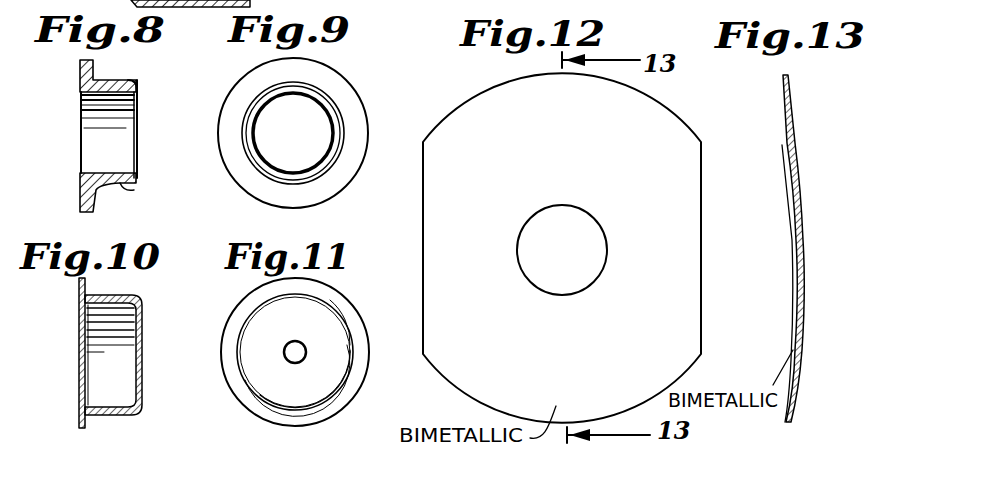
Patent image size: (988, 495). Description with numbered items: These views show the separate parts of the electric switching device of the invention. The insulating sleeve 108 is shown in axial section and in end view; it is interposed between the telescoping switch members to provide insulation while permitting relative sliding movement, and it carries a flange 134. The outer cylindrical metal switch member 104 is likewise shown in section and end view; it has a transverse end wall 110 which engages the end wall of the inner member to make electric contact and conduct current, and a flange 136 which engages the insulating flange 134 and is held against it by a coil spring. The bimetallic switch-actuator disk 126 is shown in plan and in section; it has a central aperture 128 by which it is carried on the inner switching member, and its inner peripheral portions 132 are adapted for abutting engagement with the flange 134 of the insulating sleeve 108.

In FIG. 10, the outer cylindrical metal member 104 is at (118, 415).
In FIG. 11, the outer cylindrical metal member 104 is at (332, 405).
In FIG. 8, the insulating sleeve 108 is at (134, 190).
In FIG. 9, the insulating sleeve 108 is at (240, 147).
In FIG. 10, the transverse end wall 110 is at (142, 386).
In FIG. 11, the transverse end wall 110 is at (262, 324).
In FIG. 12, the bimetallic switch-actuator disk 126 is at (455, 107).
In FIG. 13, the bimetallic switch-actuator disk 126 is at (772, 127).
In FIG. 12, the central aperture 128 is at (528, 256).
In FIG. 13, the central aperture 128 is at (798, 286).
In FIG. 12, the inner peripheral portions 132 is at (617, 247).
In FIG. 8, the flange 134 is at (80, 200).
In FIG. 9, the flange 134 is at (340, 85).
In FIG. 10, the flange 136 is at (80, 425).
In FIG. 11, the flange 136 is at (257, 407).